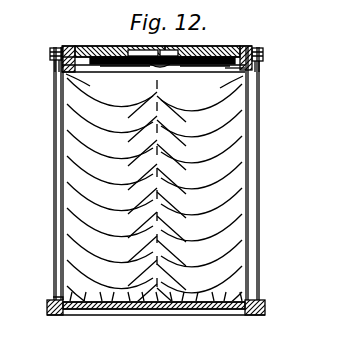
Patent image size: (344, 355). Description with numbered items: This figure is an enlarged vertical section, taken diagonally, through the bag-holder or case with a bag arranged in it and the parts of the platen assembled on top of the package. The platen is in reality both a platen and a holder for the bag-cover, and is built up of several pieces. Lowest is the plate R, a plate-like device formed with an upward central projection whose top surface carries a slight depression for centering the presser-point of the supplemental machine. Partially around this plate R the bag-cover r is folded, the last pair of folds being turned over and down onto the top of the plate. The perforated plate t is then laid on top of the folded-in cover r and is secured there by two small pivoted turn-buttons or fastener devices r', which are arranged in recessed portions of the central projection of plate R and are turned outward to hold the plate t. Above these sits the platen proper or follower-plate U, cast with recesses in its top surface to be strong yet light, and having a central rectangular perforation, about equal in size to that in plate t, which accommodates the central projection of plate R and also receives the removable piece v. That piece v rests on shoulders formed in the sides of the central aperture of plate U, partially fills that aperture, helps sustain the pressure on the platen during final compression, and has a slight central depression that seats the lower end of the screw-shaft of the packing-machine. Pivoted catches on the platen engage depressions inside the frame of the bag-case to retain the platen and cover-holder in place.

The follower-plate U is at (200, 50).
The removable piece v is at (169, 44).
The packing strip v' is at (143, 44).
The bag-cover r is at (205, 78).
The turn-buttons r' is at (125, 79).
The plate R is at (156, 72).
The perforated plate t is at (238, 72).
The bottom l is at (156, 314).
The lining L is at (176, 176).